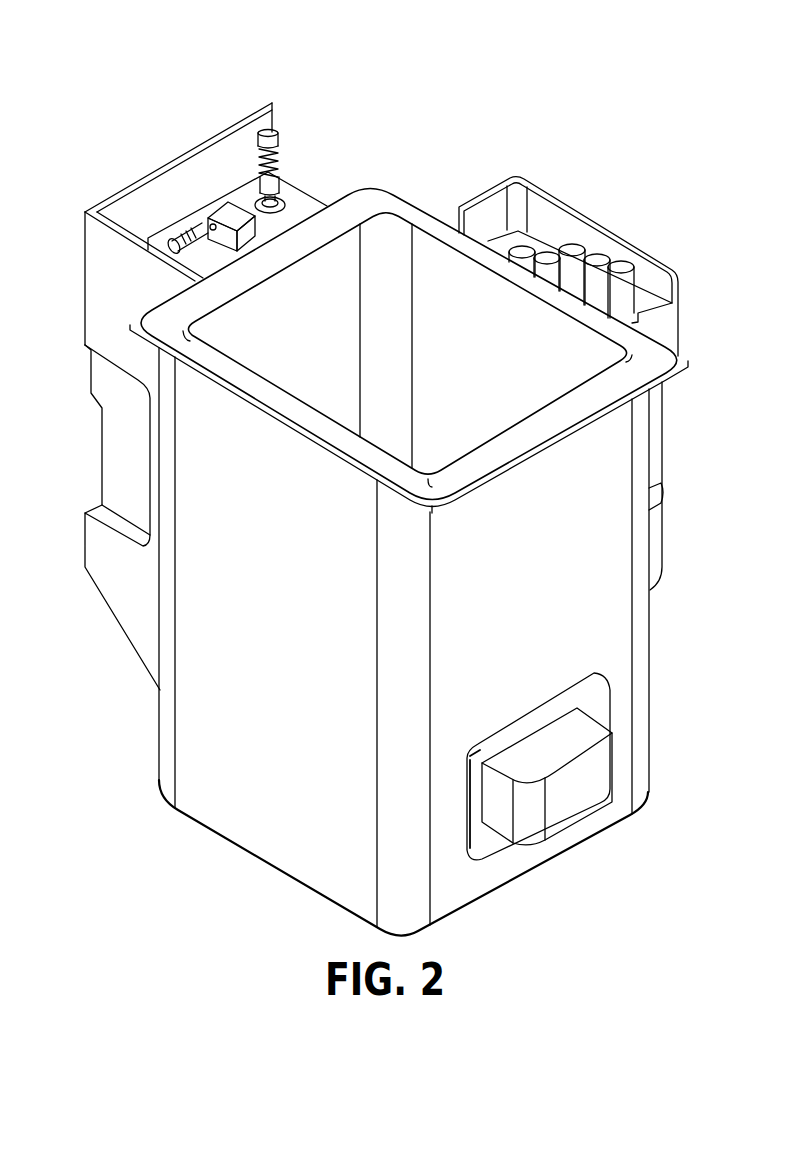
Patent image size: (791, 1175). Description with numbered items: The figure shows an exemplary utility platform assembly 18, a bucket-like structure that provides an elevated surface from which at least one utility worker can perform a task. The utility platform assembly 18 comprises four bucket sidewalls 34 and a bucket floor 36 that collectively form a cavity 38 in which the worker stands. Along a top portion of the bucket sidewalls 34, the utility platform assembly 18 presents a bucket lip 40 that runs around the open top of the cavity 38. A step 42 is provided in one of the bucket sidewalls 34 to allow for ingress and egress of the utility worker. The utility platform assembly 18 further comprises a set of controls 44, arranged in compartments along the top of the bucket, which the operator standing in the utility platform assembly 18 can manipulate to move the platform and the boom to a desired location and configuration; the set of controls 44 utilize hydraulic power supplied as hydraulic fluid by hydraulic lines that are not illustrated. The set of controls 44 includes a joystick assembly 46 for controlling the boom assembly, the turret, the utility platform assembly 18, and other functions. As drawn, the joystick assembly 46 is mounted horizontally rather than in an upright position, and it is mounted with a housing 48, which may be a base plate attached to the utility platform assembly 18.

The utility platform assembly 18 is at (80, 38).
The bucket sidewalls 34 is at (223, 732).
The bucket floor 36 is at (231, 872).
The cavity 38 is at (592, 358).
The bucket lip 40 is at (415, 200).
The step 42 is at (582, 740).
The set of controls 44 is at (213, 115).
The joystick assembly 46 is at (258, 167).
The housing 48 is at (217, 198).